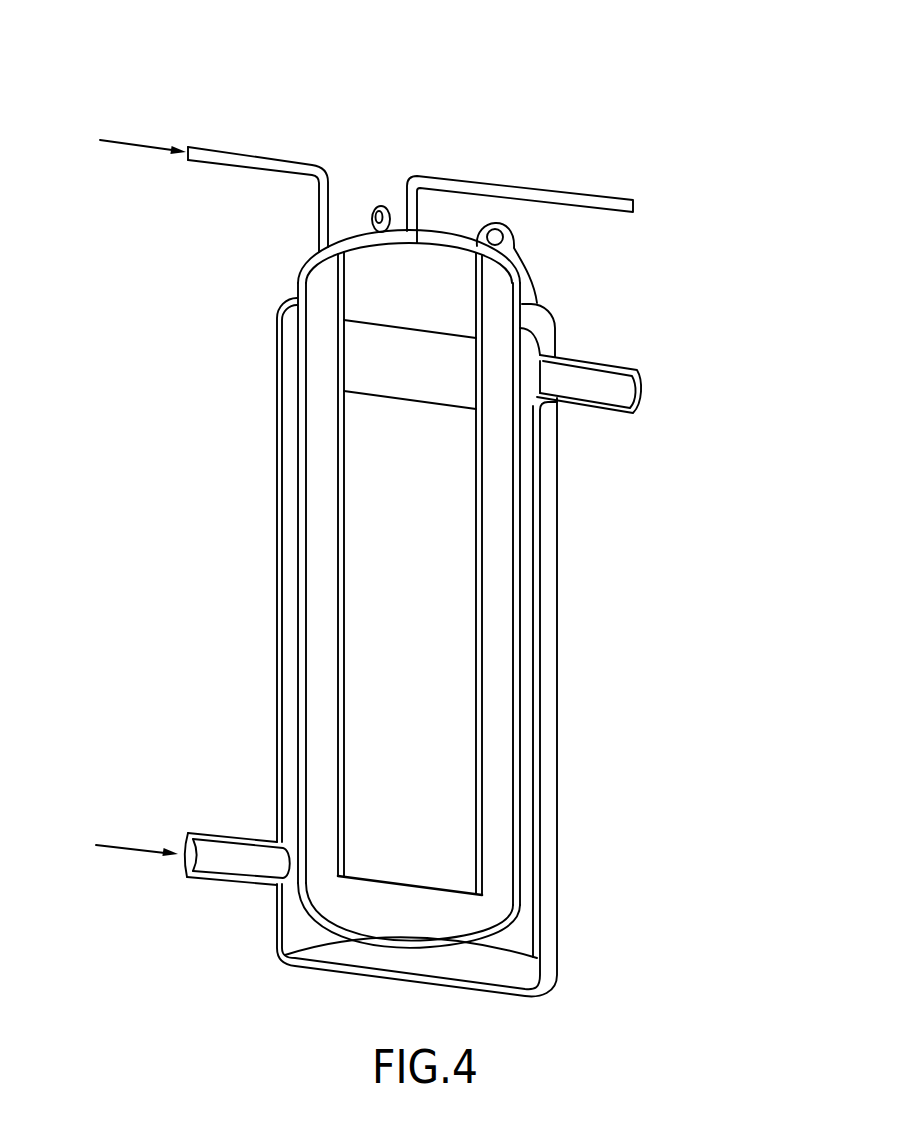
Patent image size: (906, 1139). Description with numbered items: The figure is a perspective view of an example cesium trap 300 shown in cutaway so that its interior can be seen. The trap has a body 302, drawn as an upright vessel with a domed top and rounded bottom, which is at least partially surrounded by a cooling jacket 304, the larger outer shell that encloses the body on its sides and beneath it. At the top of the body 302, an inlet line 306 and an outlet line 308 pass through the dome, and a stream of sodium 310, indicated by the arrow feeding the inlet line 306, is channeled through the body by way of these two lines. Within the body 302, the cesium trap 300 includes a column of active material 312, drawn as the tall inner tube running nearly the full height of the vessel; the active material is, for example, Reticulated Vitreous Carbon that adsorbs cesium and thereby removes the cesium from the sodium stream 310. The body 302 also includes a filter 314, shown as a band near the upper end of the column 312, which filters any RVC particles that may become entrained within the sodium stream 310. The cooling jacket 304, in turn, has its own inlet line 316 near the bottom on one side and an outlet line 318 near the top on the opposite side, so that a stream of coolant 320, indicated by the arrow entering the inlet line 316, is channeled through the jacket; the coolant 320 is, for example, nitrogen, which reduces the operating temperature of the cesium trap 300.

The cesium trap 300 is at (642, 57).
The body 302 is at (525, 280).
The cooling jacket 304 is at (277, 932).
The inlet line 306 is at (208, 147).
The outlet line 308 is at (540, 192).
The stream of sodium 310 is at (102, 140).
The column of active material 312 is at (460, 577).
The filter 314 is at (360, 348).
The inlet line 316 is at (225, 838).
The outlet line 318 is at (614, 364).
The stream of coolant 320 is at (122, 845).